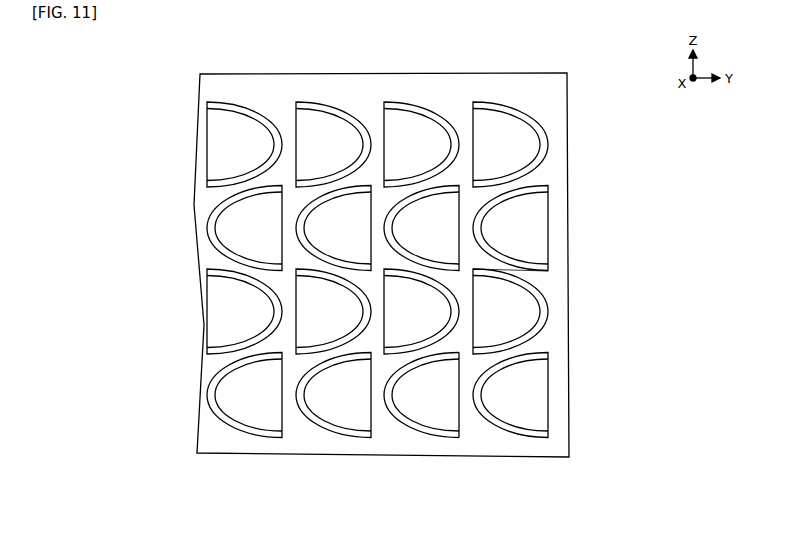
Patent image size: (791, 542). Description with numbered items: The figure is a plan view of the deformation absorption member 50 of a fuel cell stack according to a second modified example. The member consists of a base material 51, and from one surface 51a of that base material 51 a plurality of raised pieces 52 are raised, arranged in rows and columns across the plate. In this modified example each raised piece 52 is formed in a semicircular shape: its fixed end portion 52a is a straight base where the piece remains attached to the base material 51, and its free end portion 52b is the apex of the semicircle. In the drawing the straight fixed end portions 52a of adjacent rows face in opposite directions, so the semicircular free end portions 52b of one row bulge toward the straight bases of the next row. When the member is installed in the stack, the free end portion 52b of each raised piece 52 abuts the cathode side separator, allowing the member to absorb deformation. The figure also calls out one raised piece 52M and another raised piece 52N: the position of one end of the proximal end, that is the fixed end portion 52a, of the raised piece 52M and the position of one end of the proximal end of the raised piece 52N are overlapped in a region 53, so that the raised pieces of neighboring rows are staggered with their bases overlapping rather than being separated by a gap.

The deformation absorption member 50 is at (77, 48).
The base material 51 is at (350, 275).
The one surface of the base material 51a is at (212, 436).
The raised piece 52 is at (428, 430).
The fixed end portion 52a is at (460, 392).
The free end portion 52b is at (395, 398).
The another raised piece 52N is at (538, 215).
The one raised piece 52M is at (528, 302).
The region 53 is at (533, 283).